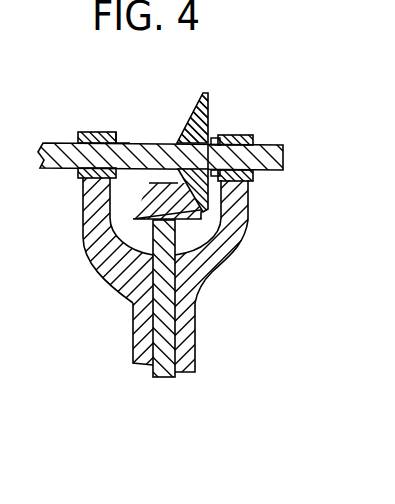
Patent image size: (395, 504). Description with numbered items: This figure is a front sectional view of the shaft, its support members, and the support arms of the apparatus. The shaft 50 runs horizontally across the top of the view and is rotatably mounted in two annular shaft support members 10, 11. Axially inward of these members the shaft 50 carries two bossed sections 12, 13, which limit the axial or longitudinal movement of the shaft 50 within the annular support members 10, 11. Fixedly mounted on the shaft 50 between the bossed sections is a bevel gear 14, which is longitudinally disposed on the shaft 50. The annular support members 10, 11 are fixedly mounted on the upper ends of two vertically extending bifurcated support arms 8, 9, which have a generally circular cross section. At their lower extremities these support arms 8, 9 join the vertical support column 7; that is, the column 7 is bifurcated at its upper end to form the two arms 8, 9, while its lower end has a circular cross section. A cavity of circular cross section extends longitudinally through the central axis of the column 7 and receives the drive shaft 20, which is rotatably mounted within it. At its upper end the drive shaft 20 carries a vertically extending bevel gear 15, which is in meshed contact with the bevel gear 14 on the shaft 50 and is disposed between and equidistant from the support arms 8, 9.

The vertical support column 7 is at (133, 328).
The support arm 8 is at (83, 243).
The support arm 9 is at (248, 237).
The annular shaft support member 10 is at (85, 132).
The annular shaft support member 11 is at (243, 136).
The bossed section 12 is at (213, 137).
The bossed section 13 is at (118, 142).
The bevel gear 14 is at (190, 119).
The bevel gear 15 is at (134, 212).
The drive shaft 20 is at (154, 378).
The shaft 50 is at (283, 170).